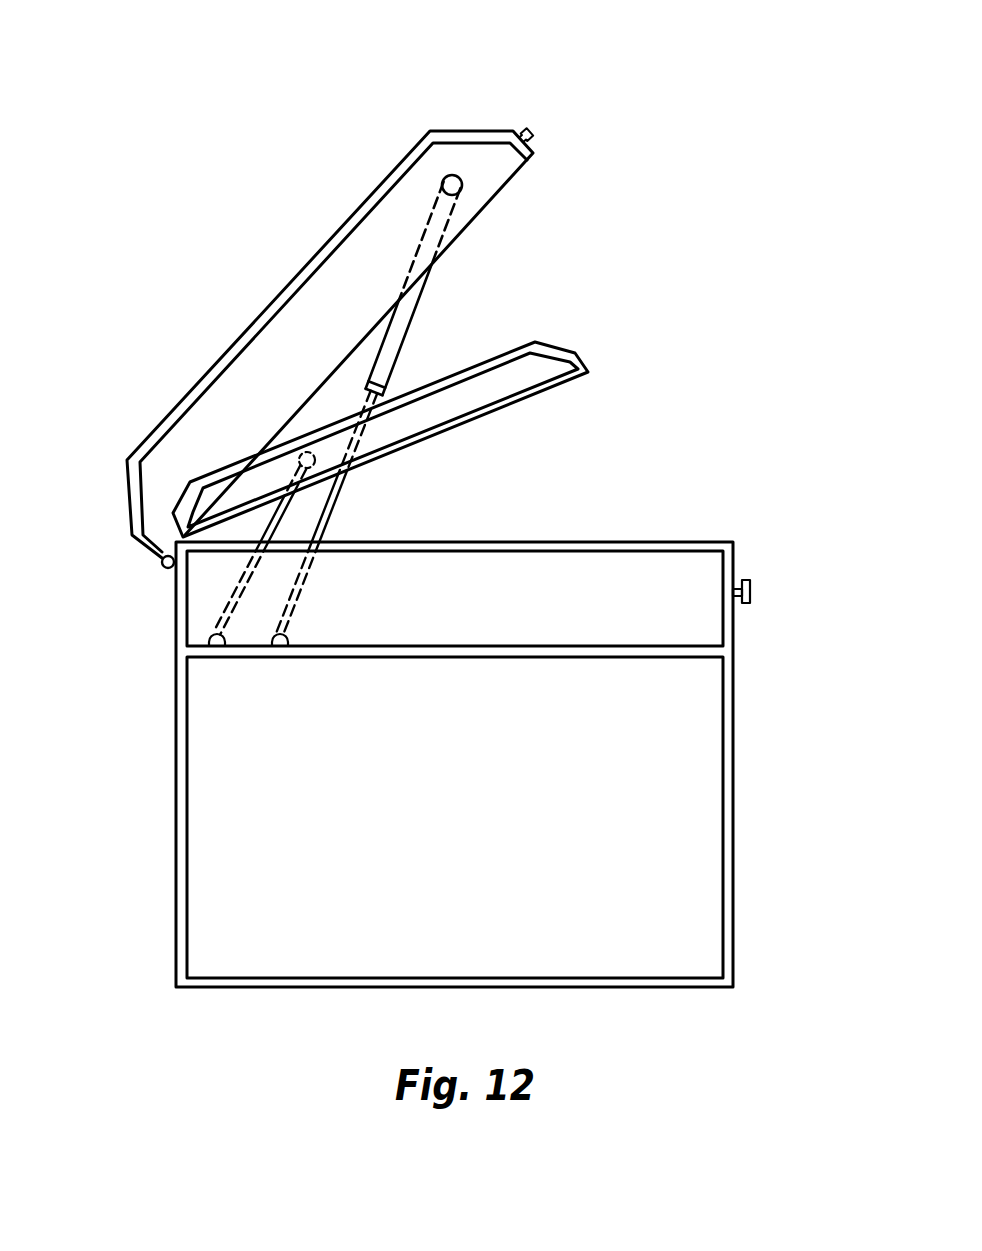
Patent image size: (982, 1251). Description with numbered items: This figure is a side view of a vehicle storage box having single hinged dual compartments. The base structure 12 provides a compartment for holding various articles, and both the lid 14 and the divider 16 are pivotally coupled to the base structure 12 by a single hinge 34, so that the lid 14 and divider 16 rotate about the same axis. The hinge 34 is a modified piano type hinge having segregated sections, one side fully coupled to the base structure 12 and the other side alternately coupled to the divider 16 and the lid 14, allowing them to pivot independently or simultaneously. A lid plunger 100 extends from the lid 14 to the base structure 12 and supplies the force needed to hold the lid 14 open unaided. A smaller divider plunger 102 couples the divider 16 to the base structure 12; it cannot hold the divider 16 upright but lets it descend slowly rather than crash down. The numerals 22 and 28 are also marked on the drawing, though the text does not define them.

The base structure 12 is at (695, 913).
The lid 14 is at (503, 163).
The divider 16 is at (553, 367).
The latch 22 is at (792, 571).
The lid assembly 28 is at (569, 96).
The hinge 34 is at (163, 566).
The lid plunger 100 is at (375, 378).
The divider plunger 102 is at (270, 518).